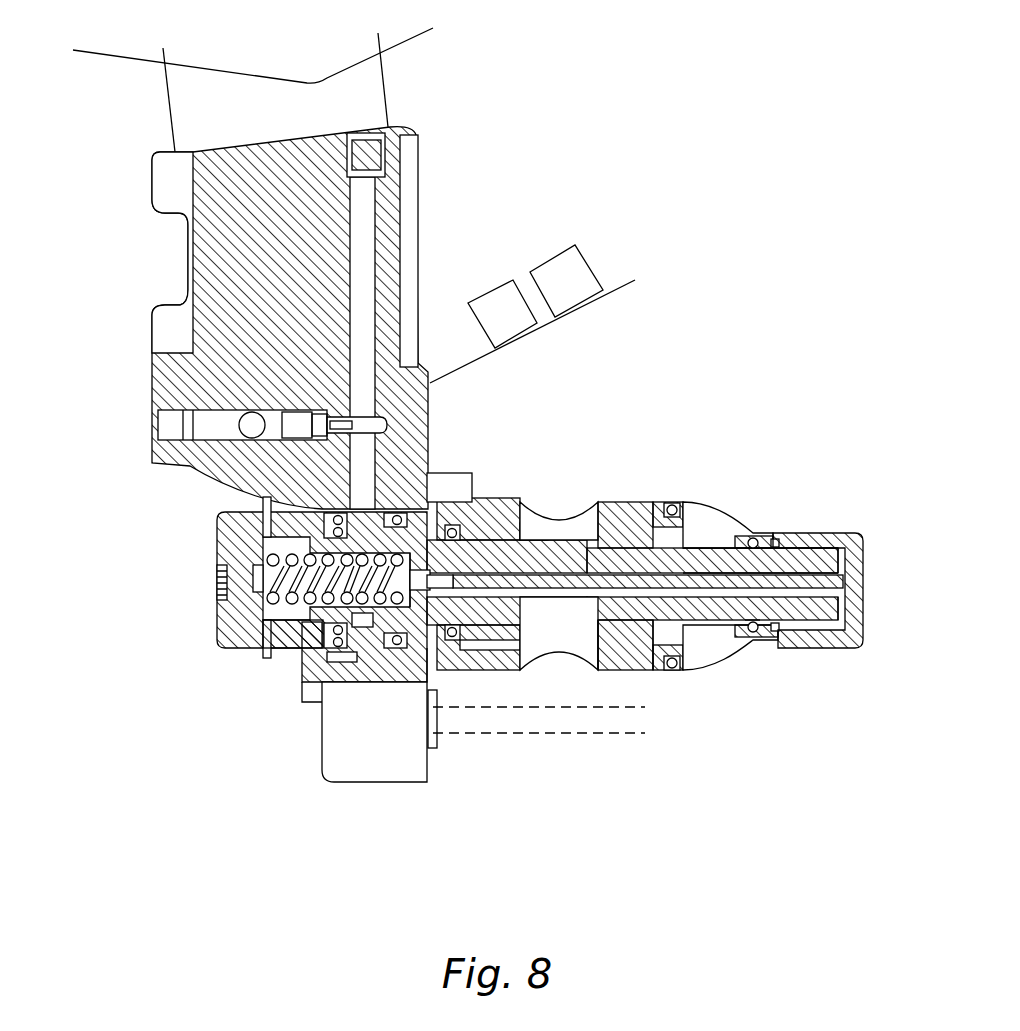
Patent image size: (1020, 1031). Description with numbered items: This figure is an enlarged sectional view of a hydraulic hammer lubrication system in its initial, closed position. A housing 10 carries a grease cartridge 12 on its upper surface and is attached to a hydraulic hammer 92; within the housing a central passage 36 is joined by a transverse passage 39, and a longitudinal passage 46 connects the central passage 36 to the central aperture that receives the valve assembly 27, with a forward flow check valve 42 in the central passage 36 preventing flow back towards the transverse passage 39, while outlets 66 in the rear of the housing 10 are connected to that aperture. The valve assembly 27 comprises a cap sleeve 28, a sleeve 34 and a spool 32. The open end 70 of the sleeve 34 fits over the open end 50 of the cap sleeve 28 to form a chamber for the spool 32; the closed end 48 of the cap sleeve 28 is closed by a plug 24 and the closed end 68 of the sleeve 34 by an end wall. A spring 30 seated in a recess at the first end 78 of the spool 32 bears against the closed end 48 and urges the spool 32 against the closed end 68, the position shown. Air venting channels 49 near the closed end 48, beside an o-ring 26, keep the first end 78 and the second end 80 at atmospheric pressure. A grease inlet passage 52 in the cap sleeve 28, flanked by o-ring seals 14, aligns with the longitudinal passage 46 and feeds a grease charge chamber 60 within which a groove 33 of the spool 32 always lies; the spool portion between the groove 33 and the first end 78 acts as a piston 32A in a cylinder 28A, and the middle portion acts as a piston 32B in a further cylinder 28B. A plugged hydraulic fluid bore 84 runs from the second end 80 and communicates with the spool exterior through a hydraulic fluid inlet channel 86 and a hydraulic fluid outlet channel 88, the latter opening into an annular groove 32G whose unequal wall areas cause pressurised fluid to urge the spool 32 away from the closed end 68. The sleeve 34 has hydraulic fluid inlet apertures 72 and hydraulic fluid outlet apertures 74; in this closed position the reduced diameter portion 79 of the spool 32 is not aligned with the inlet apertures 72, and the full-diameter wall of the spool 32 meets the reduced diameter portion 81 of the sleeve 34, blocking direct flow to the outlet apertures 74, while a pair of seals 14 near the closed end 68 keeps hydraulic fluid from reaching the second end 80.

The housing 10 is at (472, 101).
The grease cartridge 12 is at (357, 89).
The o-ring seal 14 is at (777, 540).
The plug 24 is at (223, 577).
The o-ring 26 is at (265, 660).
The valve assembly 27 is at (646, 812).
The cap sleeve 28 is at (225, 528).
The cylinder 28A is at (315, 643).
The further cylinder 28B is at (445, 655).
The spring 30 is at (302, 602).
The spool 32 is at (813, 628).
The piston 32A is at (355, 617).
The piston 32B is at (456, 640).
The annular groove 32G is at (750, 637).
The groove 33 is at (410, 640).
The sleeve 34 is at (650, 505).
The central passage 36 is at (210, 422).
The transverse passage 39 is at (252, 427).
The forward flow check valve 42 is at (298, 420).
The longitudinal passage 46 is at (367, 197).
The closed end 48 is at (227, 637).
The air venting channel 49 is at (253, 510).
The open end 50 is at (500, 515).
The grease inlet passage 52 is at (440, 500).
The grease charge chamber 60 is at (442, 498).
The outlet 66 is at (432, 680).
The closed end 68 is at (852, 537).
The open end 70 is at (480, 650).
The hydraulic fluid inlet aperture 72 is at (557, 512).
The hydraulic fluid outlet aperture 74 is at (712, 520).
The first end 78 is at (317, 622).
The reduced diameter portion 79 is at (650, 607).
The second end 80 is at (835, 615).
The reduced diameter portion 81 is at (603, 622).
The hydraulic fluid bore 84 is at (723, 575).
The hydraulic fluid inlet channel 86 is at (605, 520).
The hydraulic fluid outlet channel 88 is at (845, 572).
The hydraulic hammer 92 is at (610, 315).